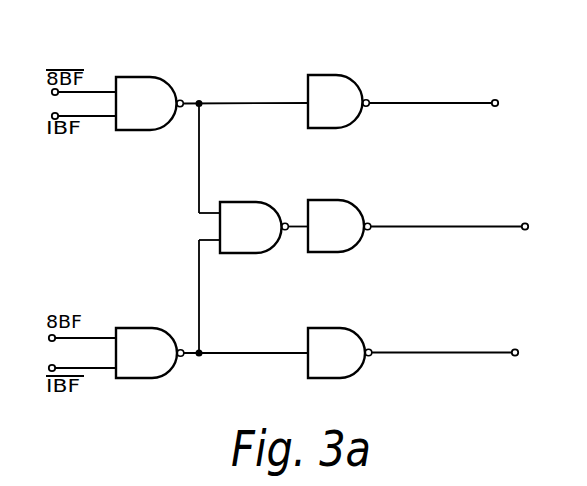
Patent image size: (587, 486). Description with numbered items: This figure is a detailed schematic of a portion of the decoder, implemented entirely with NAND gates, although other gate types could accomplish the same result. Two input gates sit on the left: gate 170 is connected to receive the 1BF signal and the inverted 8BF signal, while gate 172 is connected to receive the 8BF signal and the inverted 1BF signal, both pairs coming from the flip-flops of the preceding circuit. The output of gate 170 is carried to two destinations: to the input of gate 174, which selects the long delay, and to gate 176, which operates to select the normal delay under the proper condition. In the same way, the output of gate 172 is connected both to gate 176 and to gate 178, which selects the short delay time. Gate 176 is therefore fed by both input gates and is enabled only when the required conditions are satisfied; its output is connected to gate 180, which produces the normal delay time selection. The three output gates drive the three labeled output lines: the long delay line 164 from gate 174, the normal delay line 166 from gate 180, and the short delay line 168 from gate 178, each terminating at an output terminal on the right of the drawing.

The gate 170 is at (150, 90).
The gate 172 is at (130, 342).
The gate 174 is at (345, 90).
The gate 176 is at (247, 217).
The gate 178 is at (332, 343).
The gate 180 is at (343, 212).
The long delay output line 164 is at (455, 104).
The normal delay output line 166 is at (467, 228).
The short delay output line 168 is at (440, 354).